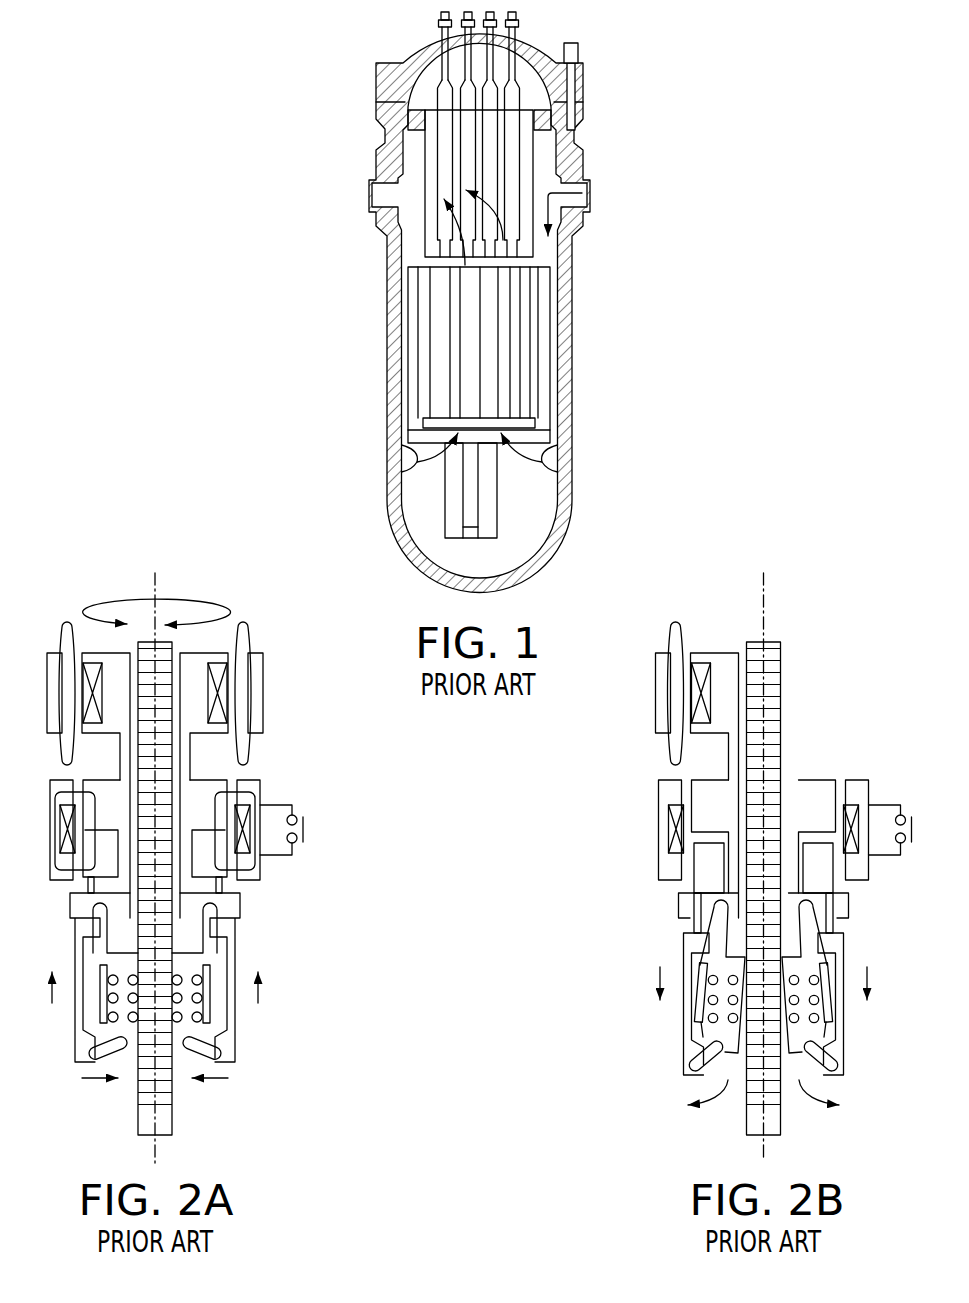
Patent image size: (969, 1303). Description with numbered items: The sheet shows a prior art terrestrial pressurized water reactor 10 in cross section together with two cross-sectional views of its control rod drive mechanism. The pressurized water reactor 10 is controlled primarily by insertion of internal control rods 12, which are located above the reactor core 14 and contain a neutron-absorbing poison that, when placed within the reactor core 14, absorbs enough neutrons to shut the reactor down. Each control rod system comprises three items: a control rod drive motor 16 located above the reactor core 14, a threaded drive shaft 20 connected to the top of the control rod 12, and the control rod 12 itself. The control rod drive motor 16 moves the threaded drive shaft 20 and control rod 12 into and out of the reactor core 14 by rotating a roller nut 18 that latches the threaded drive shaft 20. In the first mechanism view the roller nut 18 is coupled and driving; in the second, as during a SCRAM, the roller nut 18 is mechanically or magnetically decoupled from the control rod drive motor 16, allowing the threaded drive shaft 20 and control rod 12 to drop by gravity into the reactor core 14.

In FIG. 1, the pressurized water reactor 10 is at (320, 154).
In FIG. 1, the control rod 12 is at (513, 160).
In FIG. 1, the reactor core 14 is at (535, 320).
In FIG. 1, the control rod drive motor 16 is at (520, 23).
In FIG. 2A, the control rod drive motor 16 is at (93, 582).
In FIG. 2B, the control rod drive motor 16 is at (880, 582).
In FIG. 2A, the roller nut 18 is at (112, 953).
In FIG. 2B, the roller nut 18 is at (828, 1062).
In FIG. 1, the threaded drive shaft 20 is at (518, 72).
In FIG. 2A, the threaded drive shaft 20 is at (173, 1120).
In FIG. 2B, the threaded drive shaft 20 is at (747, 1125).